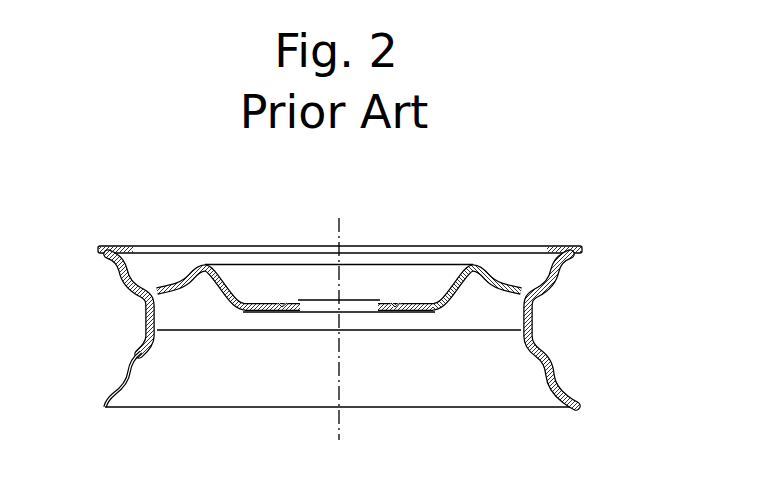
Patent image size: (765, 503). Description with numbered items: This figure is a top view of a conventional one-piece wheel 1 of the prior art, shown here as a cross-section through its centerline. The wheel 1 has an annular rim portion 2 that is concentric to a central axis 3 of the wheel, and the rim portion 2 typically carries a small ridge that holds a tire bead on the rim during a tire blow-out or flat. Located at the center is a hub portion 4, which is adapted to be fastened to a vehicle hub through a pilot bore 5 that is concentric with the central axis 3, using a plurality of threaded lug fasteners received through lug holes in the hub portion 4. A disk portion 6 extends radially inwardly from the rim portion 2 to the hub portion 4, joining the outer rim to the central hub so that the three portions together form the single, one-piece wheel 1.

The one-piece wheel 1 is at (498, 219).
The annular rim portion 2 is at (550, 350).
The central axis 3 is at (340, 424).
The hub portion 4 is at (268, 314).
The pilot bore 5 is at (313, 302).
The disk portion 6 is at (188, 274).